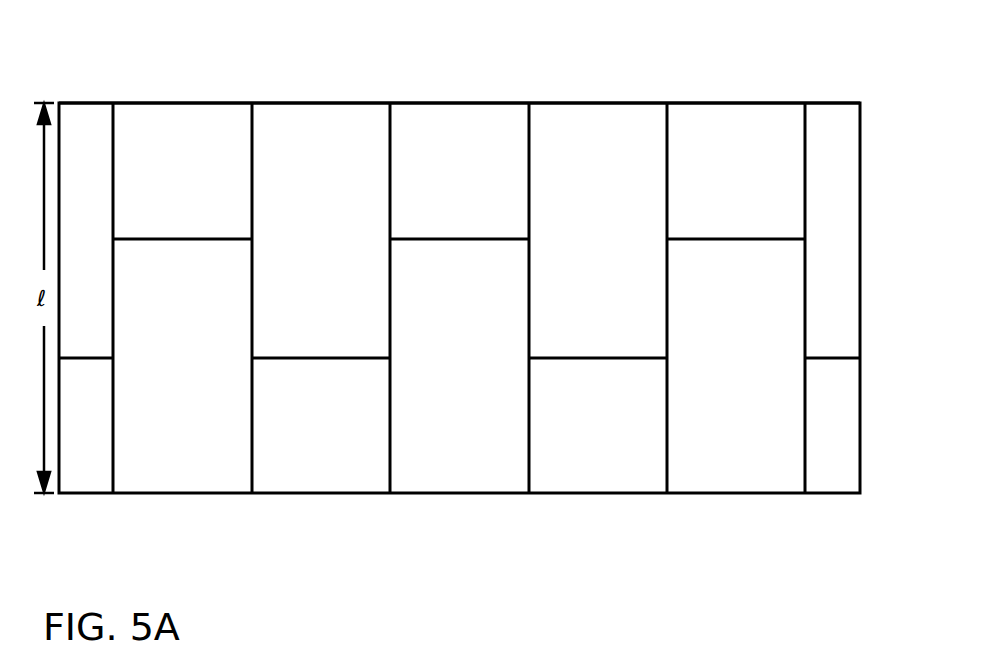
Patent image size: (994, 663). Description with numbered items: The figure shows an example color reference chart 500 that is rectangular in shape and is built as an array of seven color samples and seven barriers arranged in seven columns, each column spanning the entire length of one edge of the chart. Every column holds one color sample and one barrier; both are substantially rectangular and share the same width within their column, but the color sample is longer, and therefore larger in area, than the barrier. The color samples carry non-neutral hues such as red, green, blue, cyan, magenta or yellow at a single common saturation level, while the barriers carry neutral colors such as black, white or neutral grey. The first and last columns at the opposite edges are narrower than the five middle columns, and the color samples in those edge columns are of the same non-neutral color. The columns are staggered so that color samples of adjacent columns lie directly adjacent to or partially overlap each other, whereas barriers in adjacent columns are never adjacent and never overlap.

The color reference chart 500 is at (97, 42).